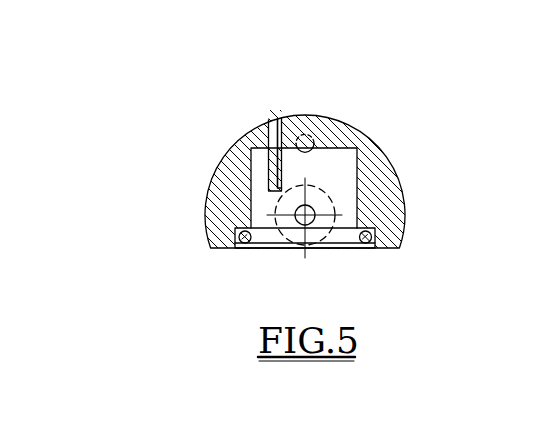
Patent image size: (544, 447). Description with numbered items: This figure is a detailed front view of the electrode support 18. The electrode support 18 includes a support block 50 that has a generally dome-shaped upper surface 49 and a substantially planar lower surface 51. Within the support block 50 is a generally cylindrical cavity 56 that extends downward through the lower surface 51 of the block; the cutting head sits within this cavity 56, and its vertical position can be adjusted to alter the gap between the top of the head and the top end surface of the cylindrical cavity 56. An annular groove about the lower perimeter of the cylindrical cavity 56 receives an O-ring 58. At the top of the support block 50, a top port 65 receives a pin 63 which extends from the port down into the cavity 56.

The electrode support 18 is at (457, 148).
The dome-shaped upper surface 49 is at (353, 125).
The support block 50 is at (237, 197).
The lower planar surface 51 is at (375, 248).
The cylindrical cavity 56 is at (342, 190).
The O-ring 58 is at (235, 248).
The pin 63 is at (271, 156).
The top port 65 is at (276, 122).